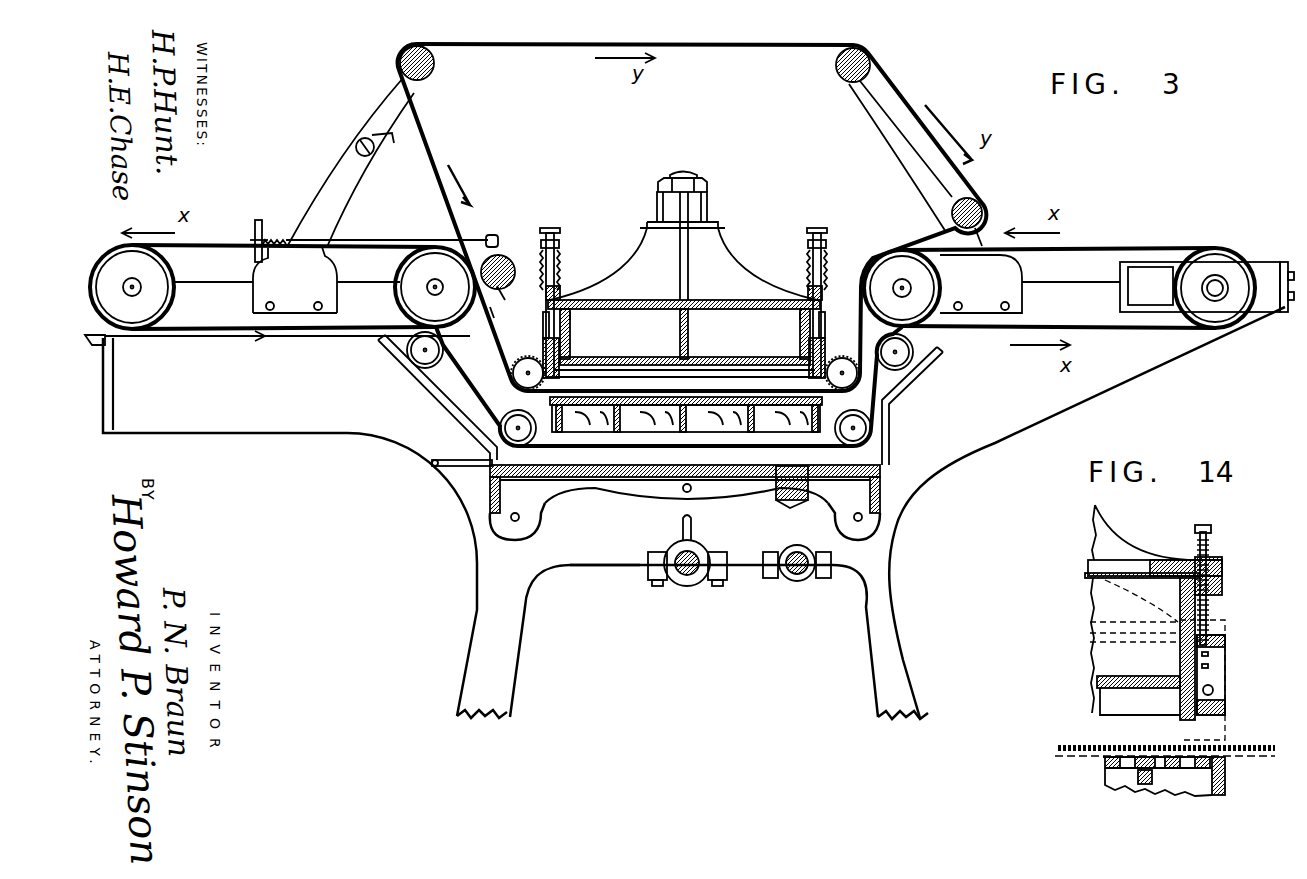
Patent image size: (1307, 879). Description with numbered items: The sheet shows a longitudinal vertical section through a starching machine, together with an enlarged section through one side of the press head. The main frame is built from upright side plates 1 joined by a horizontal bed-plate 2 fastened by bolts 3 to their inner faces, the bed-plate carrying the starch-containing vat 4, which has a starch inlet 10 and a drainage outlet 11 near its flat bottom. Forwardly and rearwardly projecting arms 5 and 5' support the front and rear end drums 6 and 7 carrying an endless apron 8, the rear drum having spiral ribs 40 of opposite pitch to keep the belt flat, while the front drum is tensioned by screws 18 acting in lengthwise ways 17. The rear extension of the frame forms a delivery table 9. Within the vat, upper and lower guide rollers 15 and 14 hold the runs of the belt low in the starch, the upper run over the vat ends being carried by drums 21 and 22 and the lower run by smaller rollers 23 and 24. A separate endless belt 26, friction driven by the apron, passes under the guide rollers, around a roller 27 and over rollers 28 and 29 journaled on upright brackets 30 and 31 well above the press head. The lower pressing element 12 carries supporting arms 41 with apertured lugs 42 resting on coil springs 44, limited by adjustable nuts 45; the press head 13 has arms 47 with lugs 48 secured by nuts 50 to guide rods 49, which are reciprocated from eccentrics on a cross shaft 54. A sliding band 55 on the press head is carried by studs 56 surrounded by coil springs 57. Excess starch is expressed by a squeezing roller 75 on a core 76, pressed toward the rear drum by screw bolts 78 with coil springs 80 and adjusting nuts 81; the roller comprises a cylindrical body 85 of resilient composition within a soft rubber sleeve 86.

In FIG. 3, the side plates 1 is at (923, 492).
In FIG. 3, the bed-plate 2 is at (490, 478).
In FIG. 3, the bolts 3 is at (858, 522).
In FIG. 3, the starch-containing vat 4 is at (640, 480).
In FIG. 3, the forwardly projecting arm 5 is at (1087, 512).
In FIG. 3, the rearwardly projecting arm 5' is at (287, 404).
In FIG. 3, the front end drum 6 is at (1230, 262).
In FIG. 3, the rear end drum 7 is at (118, 262).
In FIG. 3, the endless apron 8 is at (1105, 327).
In FIG. 14, the endless apron 8 is at (1066, 752).
In FIG. 3, the delivery table 9 is at (100, 338).
In FIG. 3, the starch inlet 10 is at (435, 463).
In FIG. 3, the drainage outlet 11 is at (790, 493).
In FIG. 3, the lower pressing element 12 is at (768, 407).
In FIG. 14, the lower pressing element 12 is at (1227, 762).
In FIG. 3, the press head 13 is at (650, 310).
In FIG. 14, the press head 13 is at (1103, 670).
In FIG. 3, the lower guide rollers 14 is at (872, 420).
In FIG. 3, the upper guide rollers 15 is at (860, 378).
In FIG. 3, the lengthwise ways 17 is at (1150, 286).
In FIG. 3, the screws 18 is at (1258, 280).
In FIG. 3, the front drum 21 is at (902, 245).
In FIG. 3, the rear drum 22 is at (431, 247).
In FIG. 3, the front small roller 23 is at (905, 352).
In FIG. 3, the rear small roller 24 is at (408, 350).
In FIG. 3, the separate endless belt 26 is at (440, 172).
In FIG. 14, the separate endless belt 26 is at (1065, 745).
In FIG. 3, the roller 27 is at (985, 214).
In FIG. 3, the roller 28 is at (845, 75).
In FIG. 3, the roller 29 is at (428, 68).
In FIG. 3, the upright bracket 30 is at (890, 125).
In FIG. 3, the upright bracket 31 is at (372, 138).
In FIG. 3, the spiral ribs 40 is at (205, 348).
In FIG. 3, the supporting arms 41 is at (812, 260).
In FIG. 3, the apertured lugs 42 is at (808, 242).
In FIG. 3, the coil springs 44 is at (828, 262).
In FIG. 3, the adjustable nuts 45 is at (818, 228).
In FIG. 3, the upwardly extending arms 47 is at (718, 252).
In FIG. 14, the upwardly extending arms 47 is at (1107, 518).
In FIG. 3, the apertured lugs 48 is at (708, 210).
In FIG. 3, the guide rods 49 is at (686, 172).
In FIG. 3, the nuts 50 is at (704, 186).
In FIG. 3, the cross shaft 54 is at (687, 578).
In FIG. 3, the sliding band 55 is at (550, 347).
In FIG. 14, the sliding band 55 is at (1210, 690).
In FIG. 3, the studs 56 is at (815, 311).
In FIG. 14, the studs 56 is at (1225, 587).
In FIG. 3, the coil springs 57 is at (802, 313).
In FIG. 14, the coil springs 57 is at (1212, 608).
In FIG. 3, the squeezing roller 75 is at (497, 286).
In FIG. 3, the core 76 is at (490, 307).
In FIG. 3, the screw bolts 78 is at (372, 242).
In FIG. 3, the coil springs 80 is at (282, 238).
In FIG. 3, the adjusting nuts 81 is at (258, 222).
In FIG. 3, the cylindrical body 85 is at (495, 240).
In FIG. 3, the soft rubber sleeve 86 is at (486, 256).